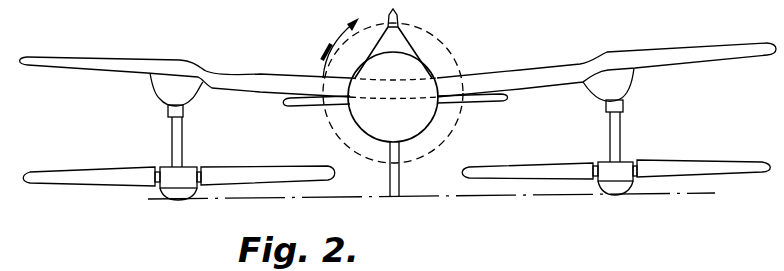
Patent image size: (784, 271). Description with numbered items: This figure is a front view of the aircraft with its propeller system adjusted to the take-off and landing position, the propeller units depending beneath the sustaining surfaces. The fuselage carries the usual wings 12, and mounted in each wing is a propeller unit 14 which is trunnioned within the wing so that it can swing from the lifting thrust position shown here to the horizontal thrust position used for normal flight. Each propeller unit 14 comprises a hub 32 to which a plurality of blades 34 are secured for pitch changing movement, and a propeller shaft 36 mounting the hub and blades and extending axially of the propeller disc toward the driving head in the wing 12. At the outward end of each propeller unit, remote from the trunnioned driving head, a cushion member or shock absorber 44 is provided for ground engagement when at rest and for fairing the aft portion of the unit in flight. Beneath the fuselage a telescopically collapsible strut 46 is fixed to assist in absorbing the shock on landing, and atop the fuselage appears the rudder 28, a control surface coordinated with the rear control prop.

The wing 12 is at (75, 62).
The propeller unit 14 is at (173, 146).
The rudder 28 is at (397, 16).
The hub 32 is at (188, 167).
The blades 34 is at (87, 175).
The propeller shaft 36 is at (182, 127).
The shock absorber 44 is at (188, 196).
The telescopically collapsible strut 46 is at (390, 181).